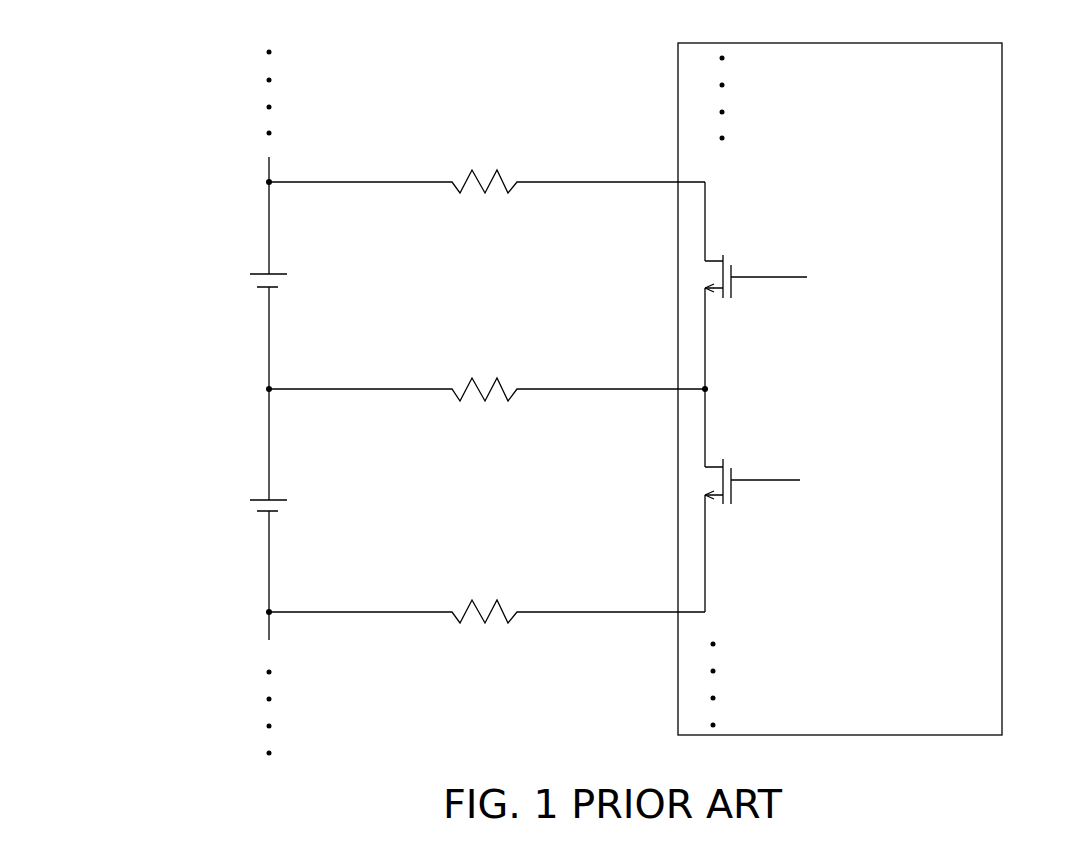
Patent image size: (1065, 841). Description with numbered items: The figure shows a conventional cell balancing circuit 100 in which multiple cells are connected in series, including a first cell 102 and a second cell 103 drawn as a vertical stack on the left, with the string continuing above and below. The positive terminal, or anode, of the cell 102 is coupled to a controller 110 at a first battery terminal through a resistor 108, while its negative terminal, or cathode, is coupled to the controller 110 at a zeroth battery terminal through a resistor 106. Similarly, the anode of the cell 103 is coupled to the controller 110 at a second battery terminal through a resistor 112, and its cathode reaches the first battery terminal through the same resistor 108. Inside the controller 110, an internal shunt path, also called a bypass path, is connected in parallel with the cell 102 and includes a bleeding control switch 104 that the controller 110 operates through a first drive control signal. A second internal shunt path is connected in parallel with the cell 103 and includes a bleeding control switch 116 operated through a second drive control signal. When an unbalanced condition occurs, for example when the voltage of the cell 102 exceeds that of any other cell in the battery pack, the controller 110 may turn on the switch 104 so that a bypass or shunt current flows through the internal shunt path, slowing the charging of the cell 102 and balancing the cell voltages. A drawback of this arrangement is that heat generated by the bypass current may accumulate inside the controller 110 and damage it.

The cell balancing circuit 100 is at (195, 139).
The first cell 102 is at (258, 500).
The second cell 103 is at (258, 275).
The bleeding control switch 104 is at (730, 470).
The resistor 106 is at (467, 607).
The resistor 108 is at (467, 385).
The controller 110 is at (1002, 66).
The resistor 112 is at (467, 177).
The bleeding control switch 116 is at (730, 270).